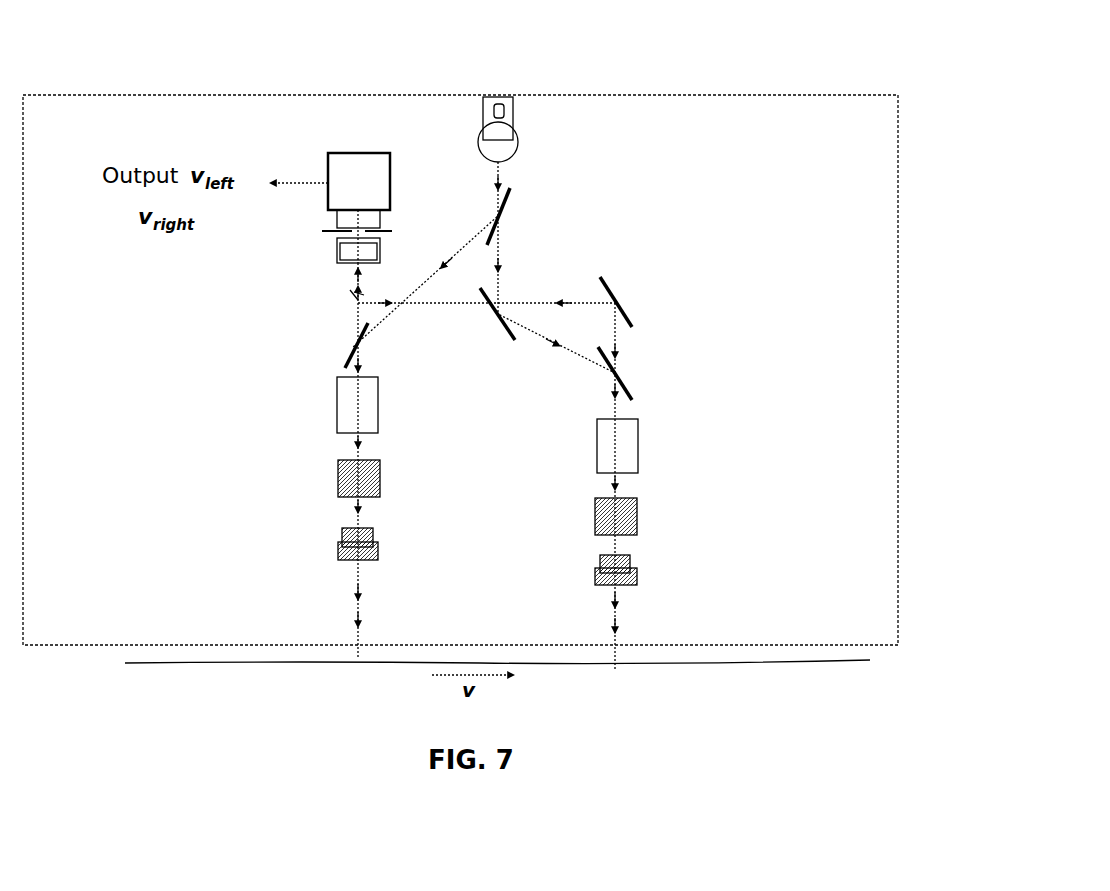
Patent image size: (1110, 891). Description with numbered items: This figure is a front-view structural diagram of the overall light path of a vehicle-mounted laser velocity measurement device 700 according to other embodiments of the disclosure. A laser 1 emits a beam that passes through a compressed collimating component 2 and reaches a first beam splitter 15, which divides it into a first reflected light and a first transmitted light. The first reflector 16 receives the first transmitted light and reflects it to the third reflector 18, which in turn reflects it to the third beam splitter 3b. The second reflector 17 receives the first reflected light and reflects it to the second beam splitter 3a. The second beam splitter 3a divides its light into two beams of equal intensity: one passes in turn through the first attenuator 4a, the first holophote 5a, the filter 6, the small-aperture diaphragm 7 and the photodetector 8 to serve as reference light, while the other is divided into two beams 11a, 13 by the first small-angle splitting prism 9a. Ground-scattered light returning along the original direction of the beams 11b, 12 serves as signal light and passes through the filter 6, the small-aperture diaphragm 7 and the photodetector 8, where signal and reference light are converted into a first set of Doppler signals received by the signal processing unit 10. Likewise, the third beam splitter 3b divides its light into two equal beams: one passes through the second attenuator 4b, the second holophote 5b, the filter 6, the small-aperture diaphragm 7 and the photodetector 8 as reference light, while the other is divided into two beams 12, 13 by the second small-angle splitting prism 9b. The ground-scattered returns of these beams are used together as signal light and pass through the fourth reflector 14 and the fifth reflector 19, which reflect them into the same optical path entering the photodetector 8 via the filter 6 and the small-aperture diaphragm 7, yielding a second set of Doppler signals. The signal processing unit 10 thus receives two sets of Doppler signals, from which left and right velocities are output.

The optical flow measurement system 700 is at (803, 31).
The laser 1 is at (483, 118).
The compressed collimating component 2 is at (482, 152).
The signal processing unit 10 is at (360, 153).
The photodetector 8 is at (337, 215).
The small-aperture diaphragm 7 is at (385, 233).
The filter 6 is at (337, 255).
The first beam splitter 15 is at (508, 213).
The fourth reflector 14 is at (630, 302).
The first reflector 16 is at (484, 296).
The second reflector 17 is at (346, 362).
The third reflector 18 is at (632, 386).
The fifth reflector 19 is at (350, 299).
The second beam splitter 3a is at (337, 410).
The third beam splitter 3b is at (597, 445).
The first small-angle splitting prism 9a is at (380, 478).
The second small-angle splitting prism 9b is at (637, 520).
The first attenuator 4a is at (342, 537).
The first holophote 5a is at (338, 553).
The second attenuator 4b is at (600, 562).
The second holophote 5b is at (595, 577).
The beam 11a is at (352, 598).
The beam 11b is at (622, 603).
The beam 13 is at (352, 627).
The beam 12 is at (622, 630).